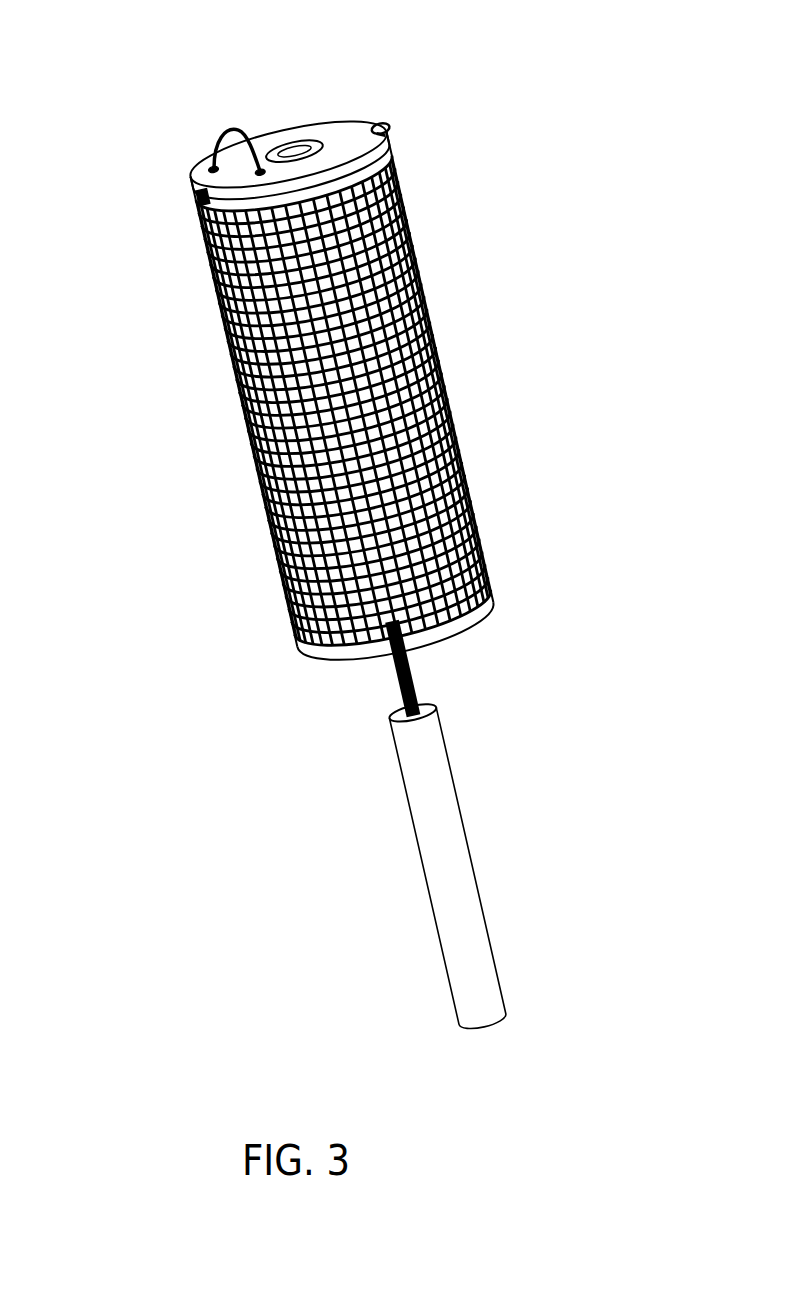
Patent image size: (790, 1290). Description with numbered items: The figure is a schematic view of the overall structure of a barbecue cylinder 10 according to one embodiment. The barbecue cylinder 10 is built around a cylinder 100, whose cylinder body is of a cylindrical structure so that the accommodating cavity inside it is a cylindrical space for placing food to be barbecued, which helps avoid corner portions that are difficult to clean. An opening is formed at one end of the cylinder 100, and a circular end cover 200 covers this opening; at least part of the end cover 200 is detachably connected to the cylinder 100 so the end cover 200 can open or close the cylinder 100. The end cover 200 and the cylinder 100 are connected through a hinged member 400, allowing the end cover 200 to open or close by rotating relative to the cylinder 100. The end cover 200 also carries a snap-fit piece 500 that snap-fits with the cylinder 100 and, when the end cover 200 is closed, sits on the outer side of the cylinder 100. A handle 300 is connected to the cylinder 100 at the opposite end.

The barbecue cylinder 10 is at (168, 42).
The cylinder 100 is at (240, 441).
The end cover 200 is at (328, 128).
The handle 300 is at (415, 847).
The hinged member 400 is at (383, 122).
The snap-fit piece 500 is at (197, 190).